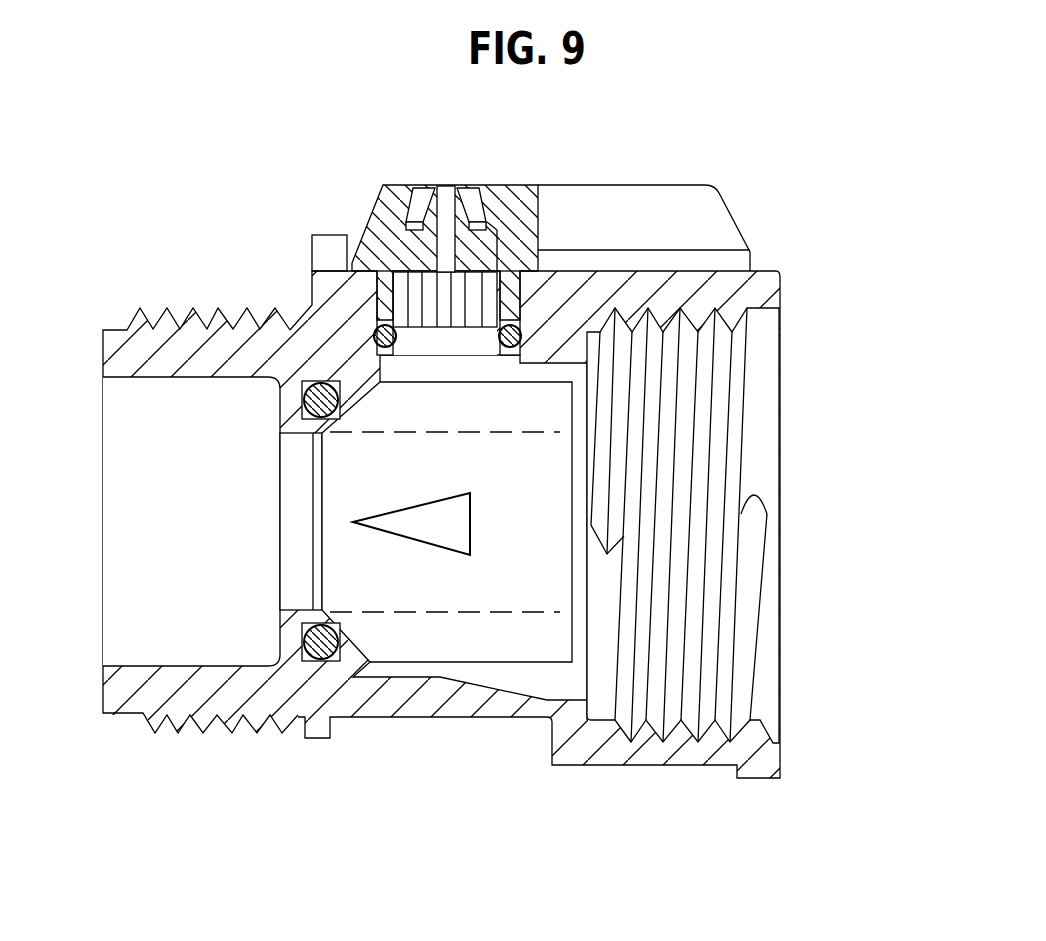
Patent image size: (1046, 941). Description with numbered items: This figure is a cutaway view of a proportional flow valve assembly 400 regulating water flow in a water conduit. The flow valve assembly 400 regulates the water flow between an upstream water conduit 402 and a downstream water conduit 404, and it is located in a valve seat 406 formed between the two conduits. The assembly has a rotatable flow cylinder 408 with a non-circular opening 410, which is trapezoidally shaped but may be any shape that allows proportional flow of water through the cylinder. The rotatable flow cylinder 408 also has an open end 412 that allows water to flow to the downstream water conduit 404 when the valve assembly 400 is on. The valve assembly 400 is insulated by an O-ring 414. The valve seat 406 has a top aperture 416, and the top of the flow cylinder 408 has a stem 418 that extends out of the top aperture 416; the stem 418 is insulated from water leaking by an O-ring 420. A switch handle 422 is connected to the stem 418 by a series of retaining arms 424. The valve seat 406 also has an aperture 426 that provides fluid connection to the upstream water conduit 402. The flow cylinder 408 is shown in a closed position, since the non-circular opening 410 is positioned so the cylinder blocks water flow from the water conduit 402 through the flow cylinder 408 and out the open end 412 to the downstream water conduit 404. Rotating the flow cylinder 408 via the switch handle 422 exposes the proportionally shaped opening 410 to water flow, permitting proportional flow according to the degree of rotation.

The proportional flow valve assembly 400 is at (358, 160).
The upstream water conduit 402 is at (150, 632).
The downstream water conduit 404 is at (760, 352).
The valve seat 406 is at (483, 663).
The rotatable flow cylinder 408 is at (302, 350).
The non-circular opening 410 is at (450, 520).
The open end 412 is at (538, 680).
The O-ring 414 is at (325, 660).
The top aperture 416 is at (377, 185).
The stem 418 is at (512, 195).
The O-ring 420 is at (318, 288).
The switch handle 422 is at (715, 223).
The retaining arms 424 is at (415, 185).
The aperture 426 is at (300, 583).